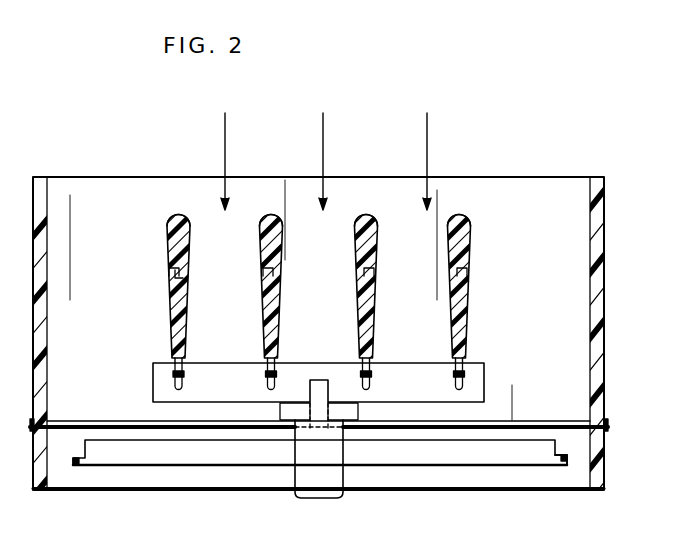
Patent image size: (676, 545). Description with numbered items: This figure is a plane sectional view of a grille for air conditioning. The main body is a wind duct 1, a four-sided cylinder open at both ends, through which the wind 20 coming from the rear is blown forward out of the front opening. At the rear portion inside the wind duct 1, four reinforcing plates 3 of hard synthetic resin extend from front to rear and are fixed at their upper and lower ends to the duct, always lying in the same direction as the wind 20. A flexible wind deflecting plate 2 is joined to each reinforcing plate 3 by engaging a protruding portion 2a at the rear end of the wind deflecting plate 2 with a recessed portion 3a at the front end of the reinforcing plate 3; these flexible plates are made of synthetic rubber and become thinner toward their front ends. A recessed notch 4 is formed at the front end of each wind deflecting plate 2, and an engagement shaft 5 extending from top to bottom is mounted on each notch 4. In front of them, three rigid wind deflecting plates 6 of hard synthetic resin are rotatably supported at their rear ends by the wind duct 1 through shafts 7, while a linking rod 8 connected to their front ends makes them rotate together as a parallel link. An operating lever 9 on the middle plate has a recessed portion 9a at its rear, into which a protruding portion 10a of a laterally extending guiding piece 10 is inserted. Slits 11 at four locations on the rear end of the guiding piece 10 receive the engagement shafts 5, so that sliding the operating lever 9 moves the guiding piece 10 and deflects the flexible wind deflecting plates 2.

The wind duct 1 is at (603, 283).
The wind deflecting plate 2 is at (263, 296).
The protruding portion 2a is at (168, 274).
The reinforcing plate 3 is at (262, 237).
The recessed portion 3a is at (187, 276).
The recessed notch 4 is at (182, 358).
The engagement shaft 5 is at (184, 379).
The wind deflecting plate 6 is at (459, 488).
The shaft 7 is at (590, 424).
The linking rod 8 is at (559, 468).
The operating lever 9 is at (342, 496).
The recessed portion 9a is at (322, 432).
The guiding piece 10 is at (484, 402).
The protruding portion 10a is at (309, 414).
The slit 11 is at (173, 375).
The wind 20 is at (225, 119).